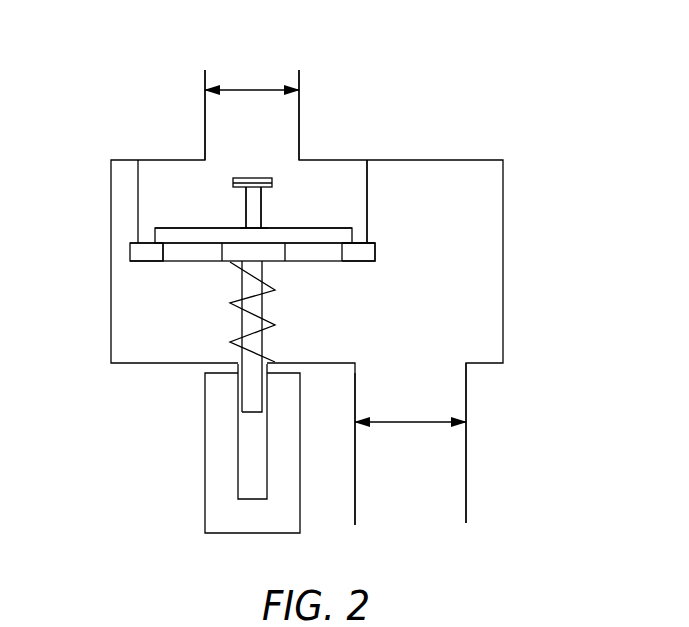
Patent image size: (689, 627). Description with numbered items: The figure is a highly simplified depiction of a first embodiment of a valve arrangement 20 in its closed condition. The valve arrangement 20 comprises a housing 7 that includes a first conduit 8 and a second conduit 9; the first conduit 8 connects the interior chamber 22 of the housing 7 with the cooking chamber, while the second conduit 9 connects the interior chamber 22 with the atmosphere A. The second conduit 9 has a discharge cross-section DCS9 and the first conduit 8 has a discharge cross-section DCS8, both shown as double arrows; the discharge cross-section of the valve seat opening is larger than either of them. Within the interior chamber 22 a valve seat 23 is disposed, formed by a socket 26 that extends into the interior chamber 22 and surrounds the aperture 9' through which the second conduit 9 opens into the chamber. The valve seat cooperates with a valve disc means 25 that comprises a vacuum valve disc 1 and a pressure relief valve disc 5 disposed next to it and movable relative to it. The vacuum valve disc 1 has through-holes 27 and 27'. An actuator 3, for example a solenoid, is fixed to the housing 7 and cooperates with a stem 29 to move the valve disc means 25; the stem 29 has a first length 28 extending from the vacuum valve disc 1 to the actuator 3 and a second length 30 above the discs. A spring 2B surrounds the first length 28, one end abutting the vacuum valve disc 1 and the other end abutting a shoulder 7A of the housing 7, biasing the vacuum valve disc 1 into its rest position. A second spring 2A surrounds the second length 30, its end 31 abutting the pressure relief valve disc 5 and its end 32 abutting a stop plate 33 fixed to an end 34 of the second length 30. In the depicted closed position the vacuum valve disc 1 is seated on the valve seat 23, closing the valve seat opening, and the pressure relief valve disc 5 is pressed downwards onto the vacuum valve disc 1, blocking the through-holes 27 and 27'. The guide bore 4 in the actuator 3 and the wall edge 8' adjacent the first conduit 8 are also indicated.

The vacuum valve disc 1 is at (368, 252).
The second spring 2A is at (243, 228).
The spring 2B is at (237, 298).
The actuator 3 is at (203, 423).
The guide bore 4 is at (247, 484).
The pressure relief valve disc 5 is at (330, 227).
The housing 7 is at (110, 256).
The shoulder 7A is at (287, 363).
The first conduit 8 is at (522, 443).
The inner wall edge 8' is at (349, 449).
The second conduit 9 is at (286, 112).
The aperture 9' is at (352, 114).
The valve arrangement 20 is at (458, 103).
The interior chamber 22 is at (416, 300).
The valve seat 23 is at (376, 243).
The valve disc means 25 is at (147, 261).
The socket 26 is at (367, 210).
The through-hole 27 is at (252, 272).
The through-hole 27' is at (326, 272).
The first length of stem 28 is at (255, 303).
The stem 29 is at (236, 323).
The second length of stem 30 is at (245, 203).
The end of spring 31 is at (243, 228).
The end of spring 32 is at (273, 178).
The stop plate 33 is at (235, 178).
The end of second length 34 is at (245, 190).
The atmosphere A is at (139, 66).
The discharge cross-section of second conduit DCS9 is at (252, 90).
The discharge cross-section of first conduit DCS8 is at (420, 422).